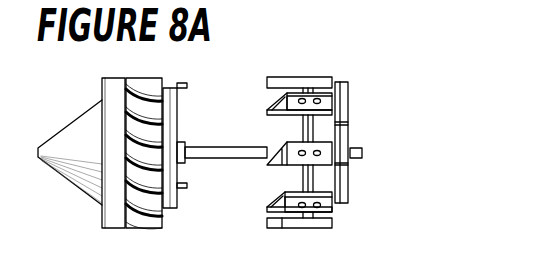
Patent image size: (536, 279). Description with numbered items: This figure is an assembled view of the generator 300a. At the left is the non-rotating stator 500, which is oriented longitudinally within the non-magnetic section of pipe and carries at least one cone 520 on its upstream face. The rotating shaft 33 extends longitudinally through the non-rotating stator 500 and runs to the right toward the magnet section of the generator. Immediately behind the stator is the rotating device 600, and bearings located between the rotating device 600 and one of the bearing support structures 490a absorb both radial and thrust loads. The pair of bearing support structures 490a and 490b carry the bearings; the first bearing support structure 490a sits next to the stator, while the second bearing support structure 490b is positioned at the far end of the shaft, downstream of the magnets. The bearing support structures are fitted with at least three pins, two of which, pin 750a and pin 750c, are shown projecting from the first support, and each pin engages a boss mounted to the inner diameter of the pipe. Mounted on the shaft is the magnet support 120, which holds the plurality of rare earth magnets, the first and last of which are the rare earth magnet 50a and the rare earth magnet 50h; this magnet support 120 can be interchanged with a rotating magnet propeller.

The actuator assembly 300a is at (349, 146).
The non-rotating stator 500 is at (115, 78).
The rotating device 600 is at (147, 78).
The pin 750a is at (182, 83).
The pin 750c is at (182, 188).
The cone 520 is at (72, 123).
The rotating shaft 33 is at (225, 147).
The bearing support structure 490a is at (166, 205).
The bearing support structure 490b is at (338, 205).
The rare earth magnet 50h is at (310, 95).
The rare earth magnet 50a is at (322, 163).
The magnet support 120 is at (289, 241).